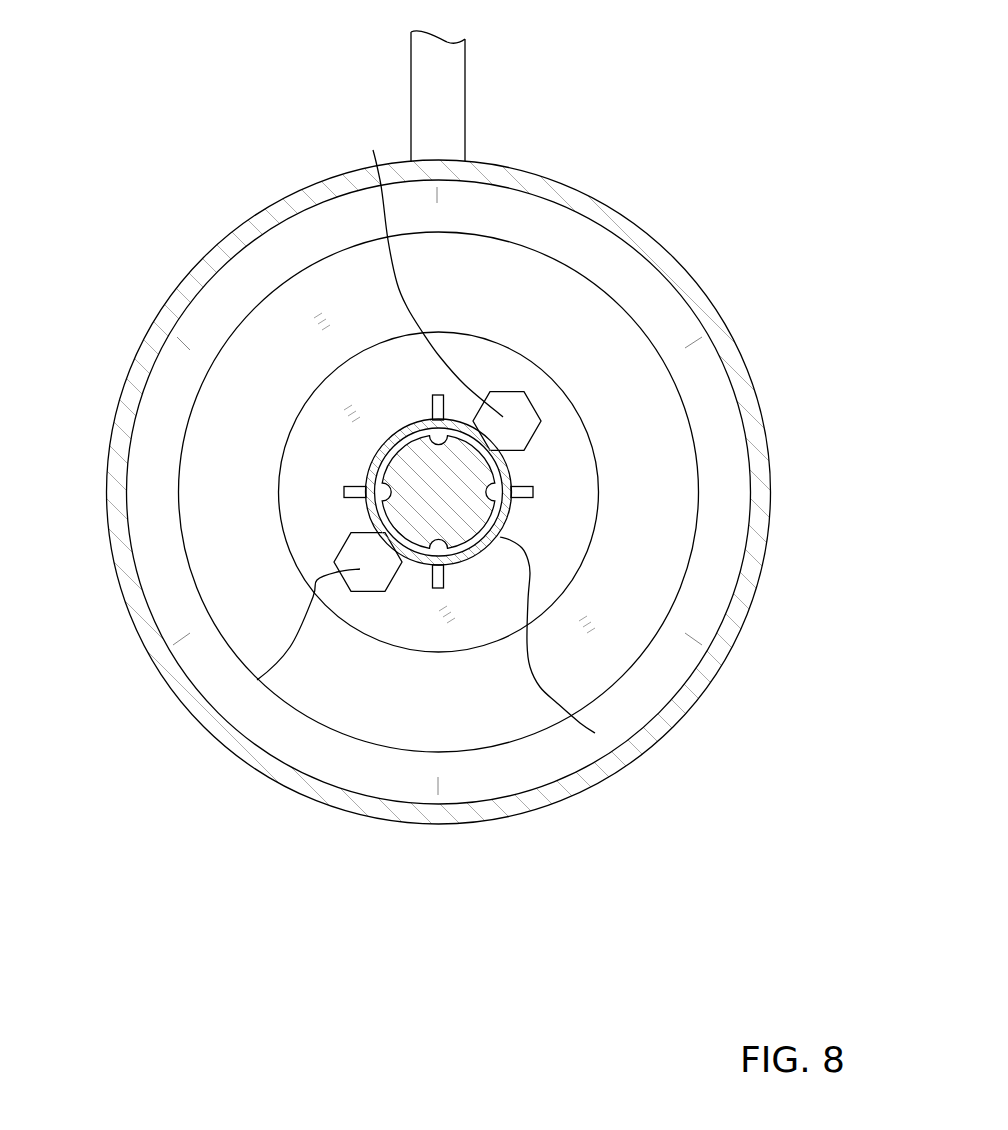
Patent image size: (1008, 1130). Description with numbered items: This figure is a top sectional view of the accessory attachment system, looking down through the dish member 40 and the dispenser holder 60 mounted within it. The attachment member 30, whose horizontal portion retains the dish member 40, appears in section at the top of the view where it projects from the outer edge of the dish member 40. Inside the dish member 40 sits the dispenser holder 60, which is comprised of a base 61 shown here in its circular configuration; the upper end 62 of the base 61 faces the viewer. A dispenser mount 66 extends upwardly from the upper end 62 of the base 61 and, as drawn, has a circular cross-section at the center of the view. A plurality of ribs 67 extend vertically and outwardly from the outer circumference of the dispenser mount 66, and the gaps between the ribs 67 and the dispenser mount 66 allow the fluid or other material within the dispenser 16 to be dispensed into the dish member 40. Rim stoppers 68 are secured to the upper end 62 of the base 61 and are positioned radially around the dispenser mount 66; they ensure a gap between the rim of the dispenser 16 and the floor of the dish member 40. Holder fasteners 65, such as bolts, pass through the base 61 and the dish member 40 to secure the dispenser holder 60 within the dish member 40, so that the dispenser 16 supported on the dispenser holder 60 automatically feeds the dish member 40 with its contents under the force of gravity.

The dispenser 16 is at (595, 733).
The attachment member 30 is at (465, 88).
The dish member 40 is at (190, 267).
The dispenser holder 60 is at (527, 357).
The base 61 is at (577, 410).
The upper end 62 is at (307, 497).
The holder fasteners 65 is at (373, 150).
The dispenser mount 66 is at (445, 495).
The ribs 67 is at (380, 483).
The rim stoppers 68 is at (533, 492).